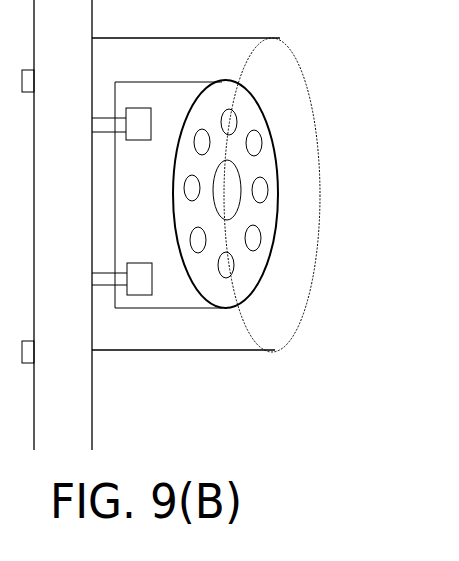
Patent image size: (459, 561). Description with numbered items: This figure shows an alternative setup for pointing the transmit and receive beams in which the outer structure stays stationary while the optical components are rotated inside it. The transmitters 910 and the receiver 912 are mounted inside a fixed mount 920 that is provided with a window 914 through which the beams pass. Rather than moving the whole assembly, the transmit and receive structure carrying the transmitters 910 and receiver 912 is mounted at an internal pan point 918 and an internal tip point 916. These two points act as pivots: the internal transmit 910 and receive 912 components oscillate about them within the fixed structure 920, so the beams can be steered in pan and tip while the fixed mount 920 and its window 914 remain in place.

The transmitter 910 is at (263, 152).
The receiver 912 is at (276, 284).
The window 914 is at (312, 96).
The internal tip point 916 is at (143, 108).
The internal pan point 918 is at (145, 297).
The fixed mount 920 is at (223, 352).